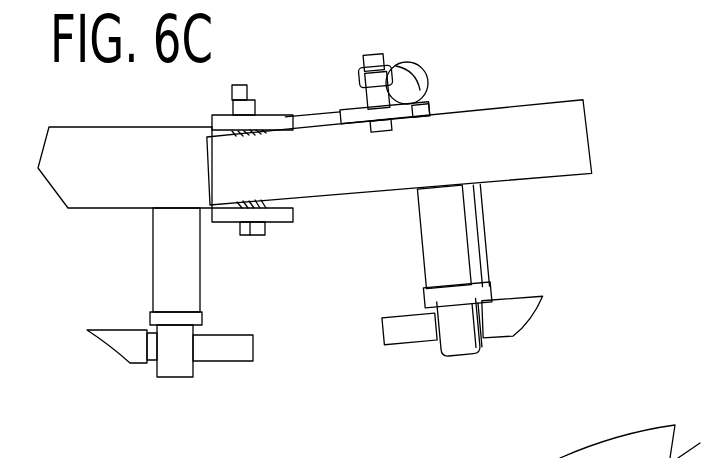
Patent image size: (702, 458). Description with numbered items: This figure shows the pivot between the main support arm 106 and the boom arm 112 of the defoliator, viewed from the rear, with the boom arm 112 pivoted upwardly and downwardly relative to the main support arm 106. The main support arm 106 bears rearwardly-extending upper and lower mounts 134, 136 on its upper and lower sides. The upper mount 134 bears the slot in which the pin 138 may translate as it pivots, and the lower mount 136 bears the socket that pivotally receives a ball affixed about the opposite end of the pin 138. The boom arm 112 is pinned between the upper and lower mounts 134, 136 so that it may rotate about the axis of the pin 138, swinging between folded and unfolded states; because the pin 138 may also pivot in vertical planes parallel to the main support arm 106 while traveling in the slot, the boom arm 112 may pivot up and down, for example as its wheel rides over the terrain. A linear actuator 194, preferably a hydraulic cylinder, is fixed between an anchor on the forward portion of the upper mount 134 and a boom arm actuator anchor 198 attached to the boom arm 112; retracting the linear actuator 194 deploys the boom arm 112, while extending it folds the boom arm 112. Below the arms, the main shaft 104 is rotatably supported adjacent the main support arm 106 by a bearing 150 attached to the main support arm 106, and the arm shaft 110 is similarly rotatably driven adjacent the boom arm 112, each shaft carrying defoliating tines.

The main support arm 106 is at (115, 120).
The boom arm 112 is at (535, 103).
The upper mount 134 is at (276, 115).
The lower mount 136 is at (286, 224).
The pin 138 is at (236, 110).
The boom arm actuator anchor 198 is at (357, 78).
The linear actuator 194 is at (418, 88).
The bearing 150 is at (181, 365).
The main shaft 104 is at (118, 347).
The arm shaft 110 is at (503, 322).